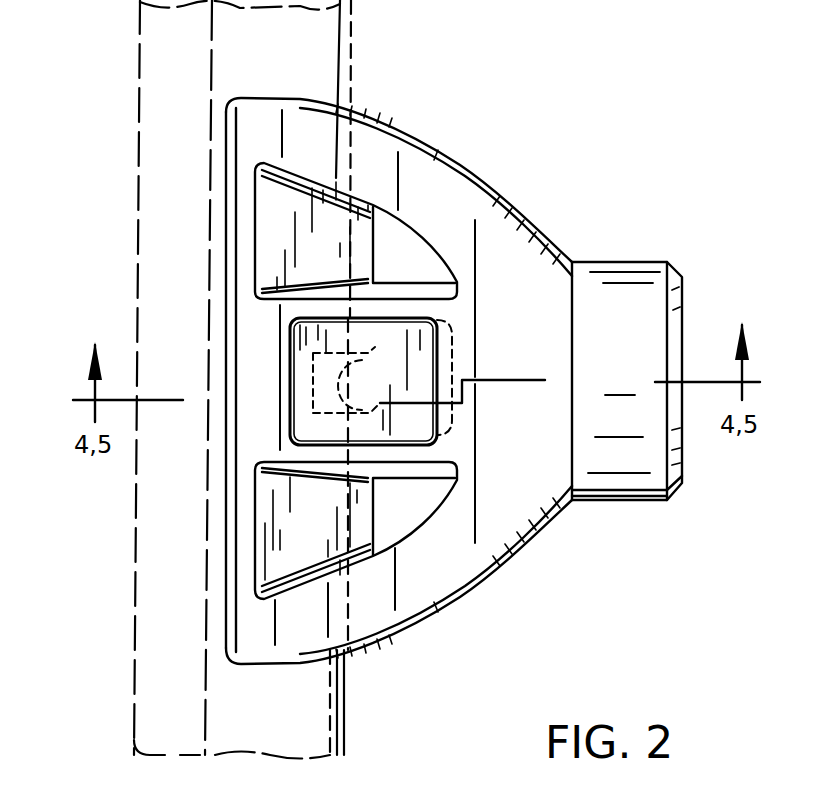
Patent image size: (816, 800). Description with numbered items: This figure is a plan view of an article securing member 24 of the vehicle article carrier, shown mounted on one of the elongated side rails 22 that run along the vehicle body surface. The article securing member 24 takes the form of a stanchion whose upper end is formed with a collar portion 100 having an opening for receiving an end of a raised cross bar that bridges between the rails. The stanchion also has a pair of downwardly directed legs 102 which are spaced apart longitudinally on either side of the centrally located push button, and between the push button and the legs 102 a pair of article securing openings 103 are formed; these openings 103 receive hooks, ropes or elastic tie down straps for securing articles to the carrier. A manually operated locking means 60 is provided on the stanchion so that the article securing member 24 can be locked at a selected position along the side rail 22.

The side rail 22 is at (346, 713).
The article securing member 24 is at (519, 219).
The manually operated locking means 60 is at (284, 325).
The collar portion 100 is at (634, 296).
The downwardly directed legs 102 is at (416, 134).
The article securing opening 103 is at (441, 258).